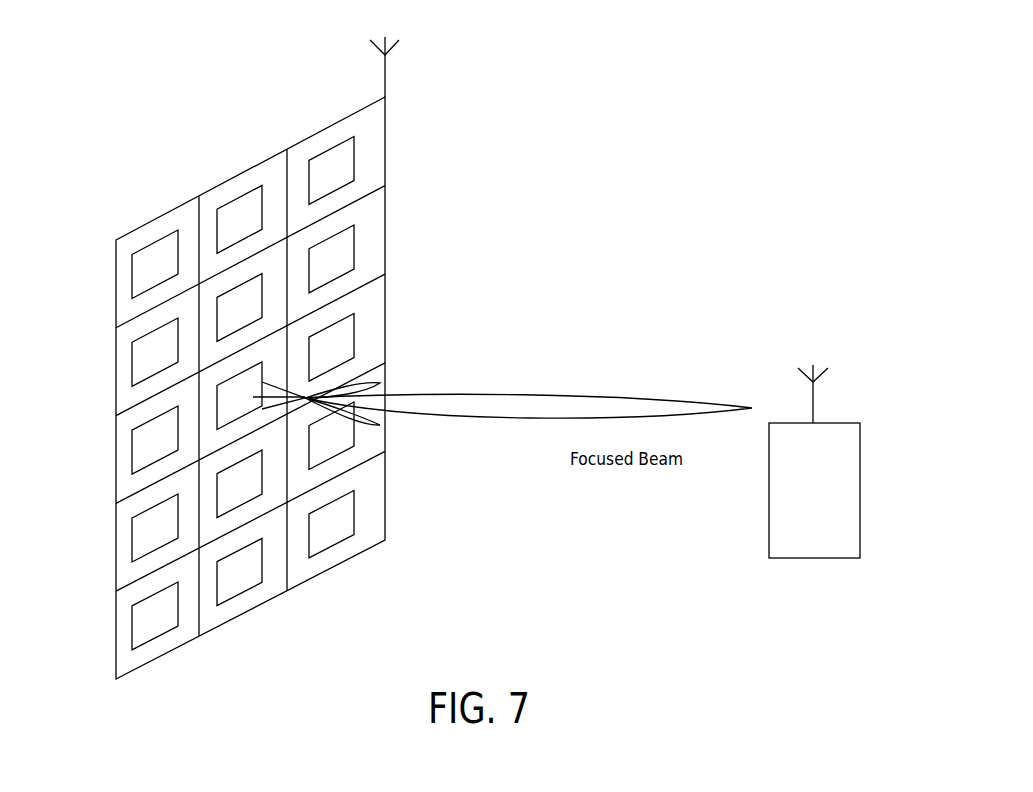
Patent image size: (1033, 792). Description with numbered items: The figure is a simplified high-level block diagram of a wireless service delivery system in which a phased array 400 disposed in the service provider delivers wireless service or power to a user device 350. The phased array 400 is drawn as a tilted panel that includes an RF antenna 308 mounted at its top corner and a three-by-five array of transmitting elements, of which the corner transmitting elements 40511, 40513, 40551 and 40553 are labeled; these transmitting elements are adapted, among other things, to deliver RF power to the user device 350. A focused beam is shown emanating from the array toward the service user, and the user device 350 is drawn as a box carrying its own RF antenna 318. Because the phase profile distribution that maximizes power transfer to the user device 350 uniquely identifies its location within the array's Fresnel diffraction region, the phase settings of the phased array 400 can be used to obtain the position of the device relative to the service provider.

The RF antenna 308 is at (396, 45).
The phased array 400 is at (248, 388).
The transmitting element 40511 is at (133, 275).
The transmitting element 40513 is at (355, 157).
The transmitting element 40551 is at (132, 626).
The transmitting element 40553 is at (365, 517).
The RF antenna 318 is at (826, 372).
The user device 350 is at (861, 494).